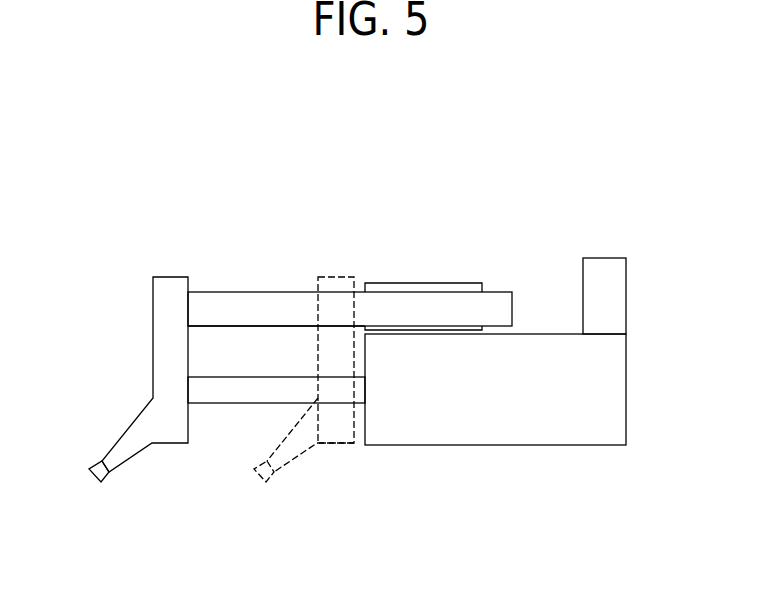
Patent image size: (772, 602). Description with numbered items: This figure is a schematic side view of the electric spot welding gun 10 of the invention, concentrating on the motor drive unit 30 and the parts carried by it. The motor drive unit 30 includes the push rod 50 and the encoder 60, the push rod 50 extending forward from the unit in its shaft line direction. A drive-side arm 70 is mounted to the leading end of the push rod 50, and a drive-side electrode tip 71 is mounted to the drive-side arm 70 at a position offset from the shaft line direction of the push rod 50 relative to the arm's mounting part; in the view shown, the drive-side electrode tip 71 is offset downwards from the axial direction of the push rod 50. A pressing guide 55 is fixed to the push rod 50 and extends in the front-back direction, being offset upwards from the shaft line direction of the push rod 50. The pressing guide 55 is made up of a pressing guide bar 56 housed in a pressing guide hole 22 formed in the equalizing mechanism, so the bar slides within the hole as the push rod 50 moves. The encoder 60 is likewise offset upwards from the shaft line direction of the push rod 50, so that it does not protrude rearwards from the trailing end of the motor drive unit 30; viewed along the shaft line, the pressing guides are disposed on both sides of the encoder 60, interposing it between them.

The electric spot welding gun 10 is at (541, 163).
The pressing guide hole 22 is at (403, 287).
The motor drive unit 30 is at (512, 432).
The push rod 50 is at (227, 393).
The pressing guide 55 is at (285, 193).
The pressing guide bar 56 is at (297, 297).
The encoder 60 is at (605, 272).
The drive-side arm 70 is at (160, 339).
The drive-side electrode tip 71 is at (98, 481).